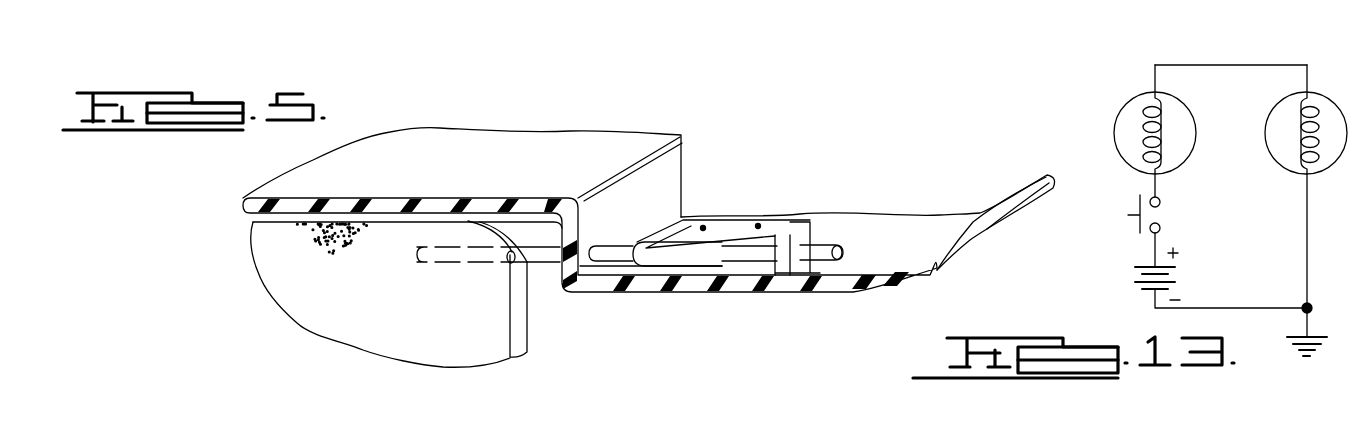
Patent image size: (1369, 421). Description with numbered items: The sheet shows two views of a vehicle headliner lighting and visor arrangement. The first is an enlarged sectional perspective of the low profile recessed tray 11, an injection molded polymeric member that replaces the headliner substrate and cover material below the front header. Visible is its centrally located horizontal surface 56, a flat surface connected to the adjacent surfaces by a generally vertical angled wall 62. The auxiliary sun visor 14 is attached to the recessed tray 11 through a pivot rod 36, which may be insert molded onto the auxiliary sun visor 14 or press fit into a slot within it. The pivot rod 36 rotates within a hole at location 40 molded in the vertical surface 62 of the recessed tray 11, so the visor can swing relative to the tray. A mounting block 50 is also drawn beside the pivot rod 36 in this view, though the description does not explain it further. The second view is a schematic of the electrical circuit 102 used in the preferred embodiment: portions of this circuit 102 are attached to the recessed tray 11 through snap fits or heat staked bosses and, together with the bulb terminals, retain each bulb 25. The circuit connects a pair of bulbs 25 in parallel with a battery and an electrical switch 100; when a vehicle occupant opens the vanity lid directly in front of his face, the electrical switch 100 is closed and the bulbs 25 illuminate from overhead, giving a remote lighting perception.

In FIG. 5, the recessed tray 11 is at (609, 128).
In FIG. 5, the vertical angled wall 62 is at (667, 173).
In FIG. 5, the auxiliary sun visor 14 is at (327, 315).
In FIG. 5, the centrally located horizontal surface 56 is at (290, 215).
In FIG. 5, the pivot rod 36 is at (509, 253).
In FIG. 5, the hole location 40 is at (604, 246).
In FIG. 5, the mounting block 50 is at (677, 258).
In FIG. 13, the electrical circuit 102 is at (1214, 38).
In FIG. 13, the bulb 25 is at (1263, 115).
In FIG. 13, the electrical switch 100 is at (1176, 221).